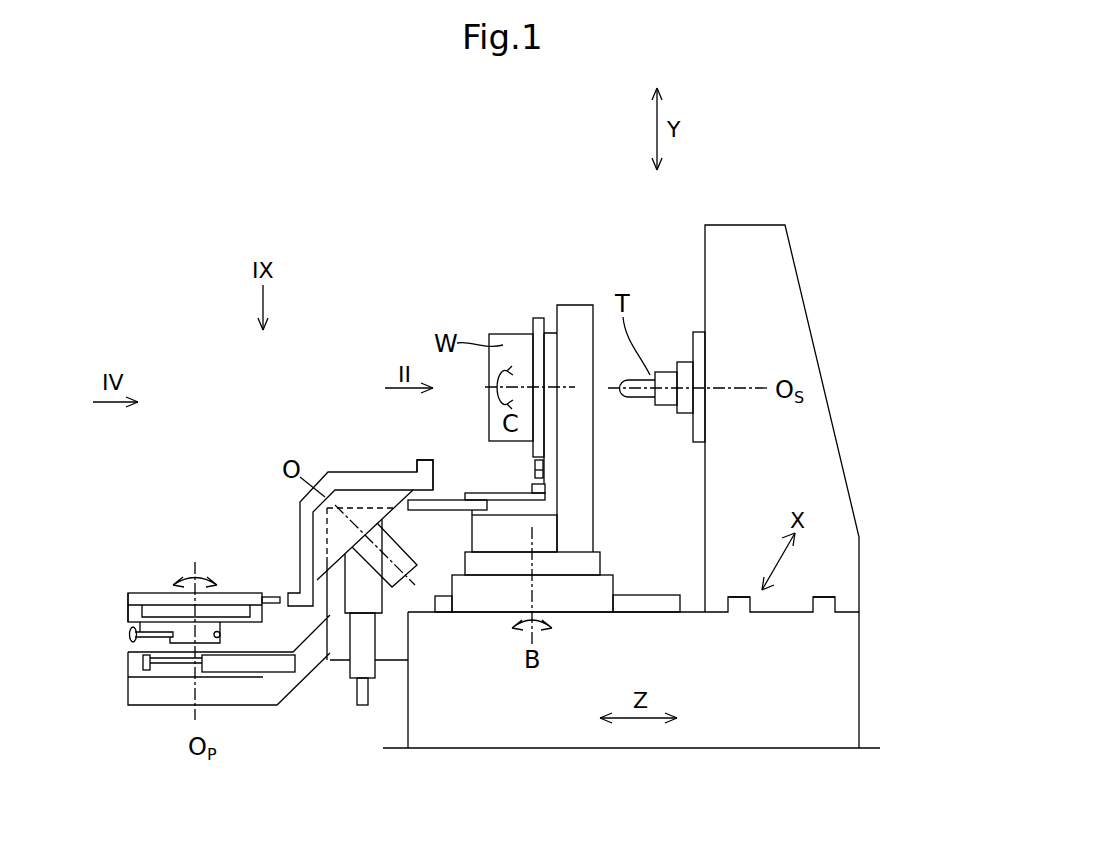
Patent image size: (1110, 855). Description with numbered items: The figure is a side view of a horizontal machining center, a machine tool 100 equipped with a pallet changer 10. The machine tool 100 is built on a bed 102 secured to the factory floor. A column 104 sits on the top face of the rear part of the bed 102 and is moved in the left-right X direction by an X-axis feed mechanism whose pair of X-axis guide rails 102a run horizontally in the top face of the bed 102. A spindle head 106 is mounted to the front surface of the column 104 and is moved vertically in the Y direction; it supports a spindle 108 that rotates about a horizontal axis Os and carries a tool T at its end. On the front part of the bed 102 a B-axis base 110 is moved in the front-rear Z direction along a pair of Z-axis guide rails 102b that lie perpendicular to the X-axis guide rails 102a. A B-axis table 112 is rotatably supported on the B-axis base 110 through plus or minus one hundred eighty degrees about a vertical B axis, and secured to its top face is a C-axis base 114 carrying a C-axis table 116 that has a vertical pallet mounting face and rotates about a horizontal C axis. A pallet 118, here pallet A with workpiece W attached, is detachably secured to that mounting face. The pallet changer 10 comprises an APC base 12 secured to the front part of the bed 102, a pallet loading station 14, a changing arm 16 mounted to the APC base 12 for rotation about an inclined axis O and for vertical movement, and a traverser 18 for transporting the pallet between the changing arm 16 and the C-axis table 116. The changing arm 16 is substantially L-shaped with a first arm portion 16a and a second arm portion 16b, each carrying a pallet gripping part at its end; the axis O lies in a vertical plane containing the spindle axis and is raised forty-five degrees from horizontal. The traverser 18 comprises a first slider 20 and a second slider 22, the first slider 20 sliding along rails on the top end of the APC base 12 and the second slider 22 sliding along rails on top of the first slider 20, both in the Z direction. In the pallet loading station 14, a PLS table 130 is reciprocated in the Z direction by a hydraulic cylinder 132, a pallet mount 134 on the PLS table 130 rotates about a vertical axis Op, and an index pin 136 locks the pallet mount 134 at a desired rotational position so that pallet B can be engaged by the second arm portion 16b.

The pallet changer 10 is at (303, 447).
The APC base 12 is at (392, 650).
The pallet loading station 14 is at (240, 697).
The changing arm 16 is at (343, 477).
The first arm portion 16a is at (407, 477).
The second arm portion 16b is at (298, 558).
The traverser 18 is at (473, 435).
The first slider 20 is at (445, 505).
The second slider 22 is at (517, 495).
The machine tool 100 is at (827, 205).
The bed 102 is at (840, 672).
The X-axis guide rails 102a is at (738, 607).
The Z-axis guide rails 102b is at (648, 605).
The column 104 is at (797, 355).
The spindle head 106 is at (700, 432).
The spindle 108 is at (685, 370).
The B-axis base 110 is at (577, 598).
The B-axis table 112 is at (483, 562).
The C-axis base 114 is at (580, 317).
The C-axis table 116 is at (552, 337).
The pallet 118 is at (533, 327).
The PLS table 130 is at (245, 638).
The hydraulic cylinder 132 is at (283, 665).
The pallet mount 134 is at (130, 613).
The index pin 136 is at (128, 637).